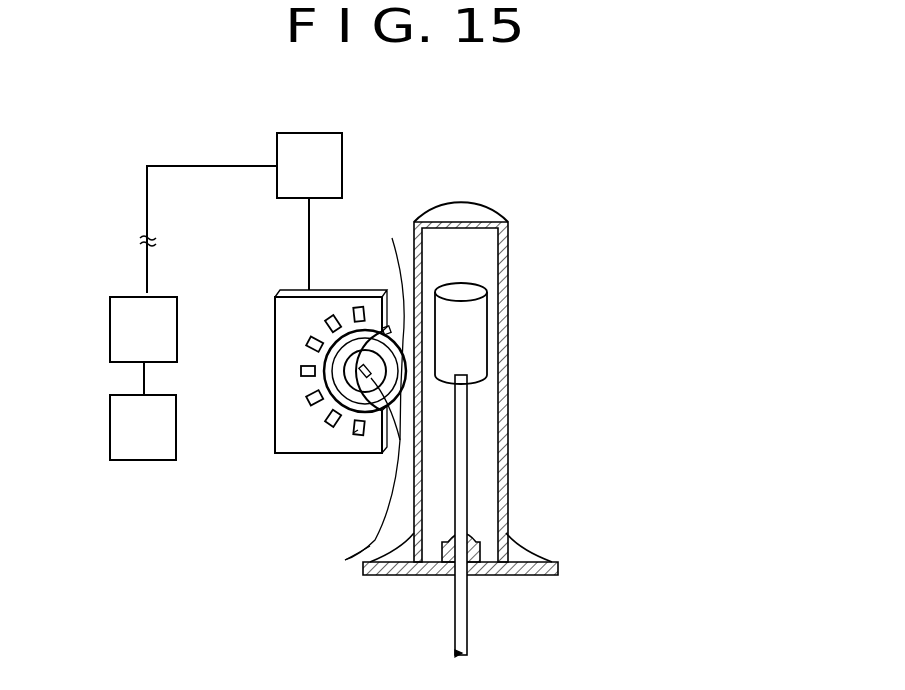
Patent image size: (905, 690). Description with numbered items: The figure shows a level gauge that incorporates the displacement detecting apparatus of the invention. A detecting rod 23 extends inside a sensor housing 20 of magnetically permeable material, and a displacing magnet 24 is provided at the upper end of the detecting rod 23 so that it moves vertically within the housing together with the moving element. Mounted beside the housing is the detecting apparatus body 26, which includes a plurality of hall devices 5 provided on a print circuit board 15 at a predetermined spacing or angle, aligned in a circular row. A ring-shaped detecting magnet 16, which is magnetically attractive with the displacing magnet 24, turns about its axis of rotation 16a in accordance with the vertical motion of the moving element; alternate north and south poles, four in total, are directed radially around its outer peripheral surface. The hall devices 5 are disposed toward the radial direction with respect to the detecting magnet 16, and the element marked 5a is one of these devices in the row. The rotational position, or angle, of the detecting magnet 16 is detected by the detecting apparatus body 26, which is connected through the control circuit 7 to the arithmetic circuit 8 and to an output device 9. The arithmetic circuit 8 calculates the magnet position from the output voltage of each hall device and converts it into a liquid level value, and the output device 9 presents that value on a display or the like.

The hall device 5 is at (352, 304).
The pole piece end 5a is at (355, 440).
The control circuit 7 is at (297, 133).
The arithmetic circuit 8 is at (110, 333).
The output device 9 is at (110, 428).
The print circuit board 15 is at (275, 405).
The detecting magnet 16 is at (365, 378).
The axis of rotation 16a is at (346, 559).
The sensor housing 20 is at (505, 248).
The detecting rod 23 is at (460, 470).
The displacing magnet 24 is at (478, 335).
The detecting apparatus body 26 is at (267, 449).